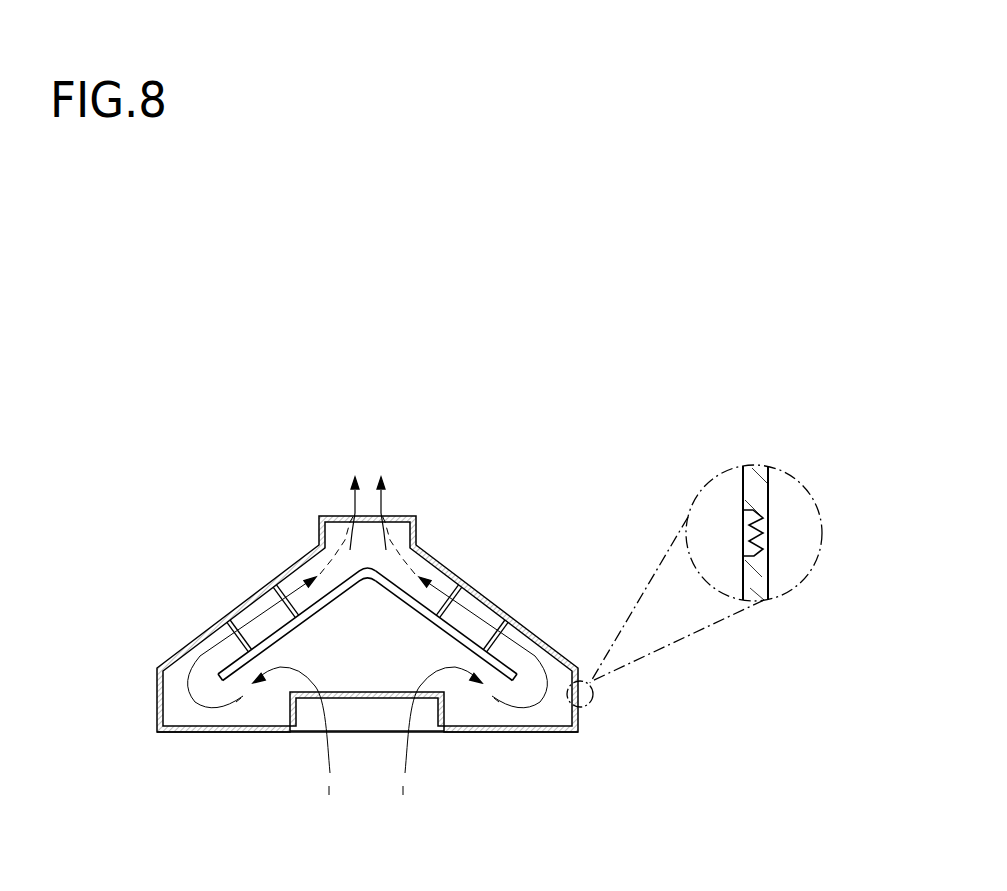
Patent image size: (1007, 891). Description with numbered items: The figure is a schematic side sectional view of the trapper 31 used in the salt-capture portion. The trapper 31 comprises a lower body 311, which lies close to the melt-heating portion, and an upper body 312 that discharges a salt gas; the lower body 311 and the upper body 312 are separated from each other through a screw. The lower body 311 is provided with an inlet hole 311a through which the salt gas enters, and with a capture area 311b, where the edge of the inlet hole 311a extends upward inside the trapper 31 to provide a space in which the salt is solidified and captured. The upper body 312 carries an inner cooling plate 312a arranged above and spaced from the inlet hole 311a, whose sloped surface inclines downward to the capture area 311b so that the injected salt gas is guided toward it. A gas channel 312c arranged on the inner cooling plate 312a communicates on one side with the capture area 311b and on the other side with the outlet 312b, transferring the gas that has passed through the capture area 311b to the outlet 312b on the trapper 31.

The trapper 31 is at (131, 382).
The lower body 311 is at (150, 740).
The inlet hole 311a is at (378, 716).
The capture area 311b is at (270, 712).
The upper body 312 is at (176, 635).
The inner cooling plate 312a is at (326, 612).
The outlet 312b is at (370, 527).
The gas channel 312c is at (470, 612).